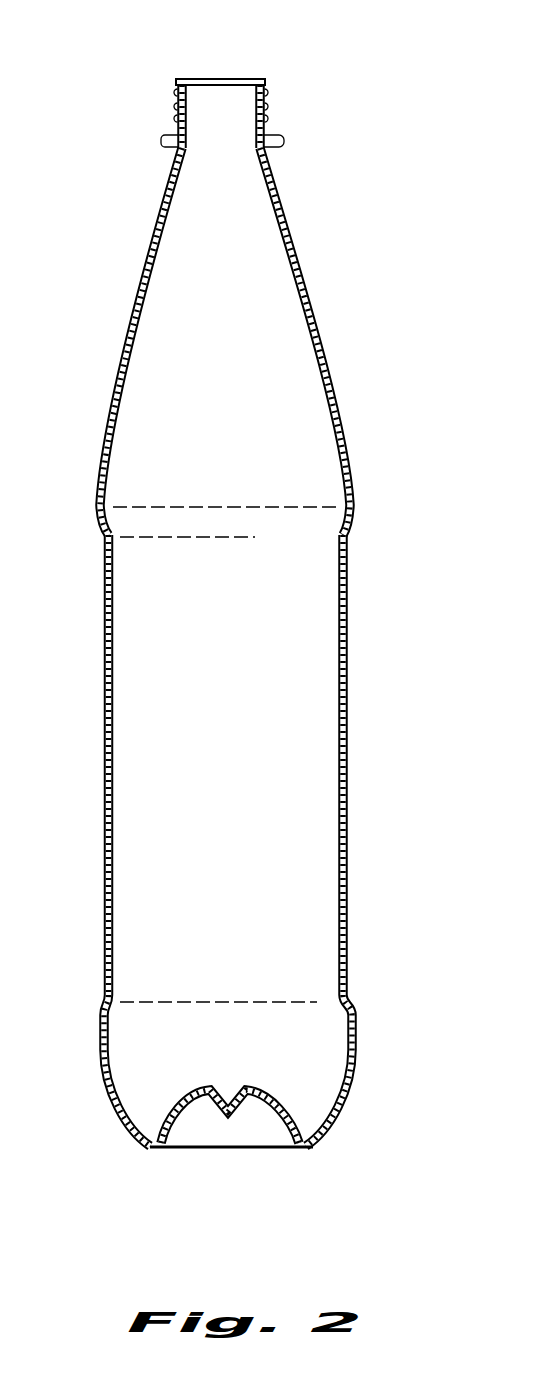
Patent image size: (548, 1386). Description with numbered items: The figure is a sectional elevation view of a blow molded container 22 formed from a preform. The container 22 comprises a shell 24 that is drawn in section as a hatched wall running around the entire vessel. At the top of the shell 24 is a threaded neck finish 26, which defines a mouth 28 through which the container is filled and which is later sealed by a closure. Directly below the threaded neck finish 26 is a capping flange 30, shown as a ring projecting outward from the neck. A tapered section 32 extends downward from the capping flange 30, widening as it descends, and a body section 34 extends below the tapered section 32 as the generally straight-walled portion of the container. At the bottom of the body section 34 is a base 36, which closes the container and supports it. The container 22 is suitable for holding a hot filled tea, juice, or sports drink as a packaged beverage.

The container 22 is at (230, 612).
The shell 24 is at (358, 616).
The threaded neck finish 26 is at (264, 100).
The mouth 28 is at (181, 78).
The capping flange 30 is at (284, 142).
The tapered section 32 is at (136, 297).
The body section 34 is at (104, 657).
The base 36 is at (212, 1118).